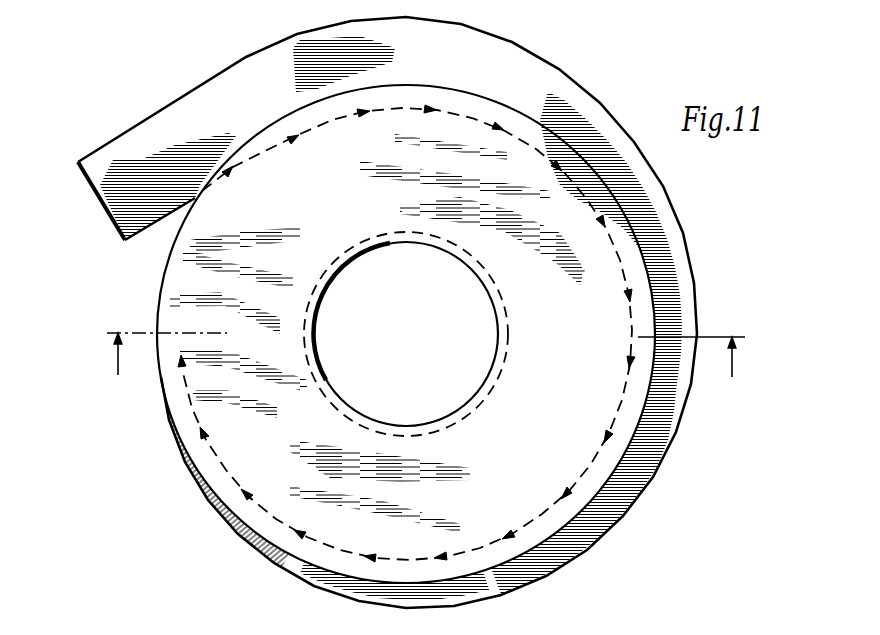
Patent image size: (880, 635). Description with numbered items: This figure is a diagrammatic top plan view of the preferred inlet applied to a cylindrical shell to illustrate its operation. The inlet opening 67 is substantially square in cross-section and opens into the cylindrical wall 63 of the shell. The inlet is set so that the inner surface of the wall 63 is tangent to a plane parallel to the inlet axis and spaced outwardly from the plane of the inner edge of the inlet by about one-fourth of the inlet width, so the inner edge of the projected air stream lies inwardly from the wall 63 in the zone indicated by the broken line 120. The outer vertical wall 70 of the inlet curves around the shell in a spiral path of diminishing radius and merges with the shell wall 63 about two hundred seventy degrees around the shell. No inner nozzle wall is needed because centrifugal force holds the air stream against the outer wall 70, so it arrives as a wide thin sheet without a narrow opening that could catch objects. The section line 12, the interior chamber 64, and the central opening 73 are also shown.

The outer vertical wall 70 is at (686, 237).
The inlet opening 67 is at (112, 219).
The cylindrical wall 63 is at (160, 291).
The central opening 73 is at (313, 375).
The interior chamber 64 is at (556, 393).
The broken line 120 is at (270, 150).
The section line 12- 12 is at (425, 355).